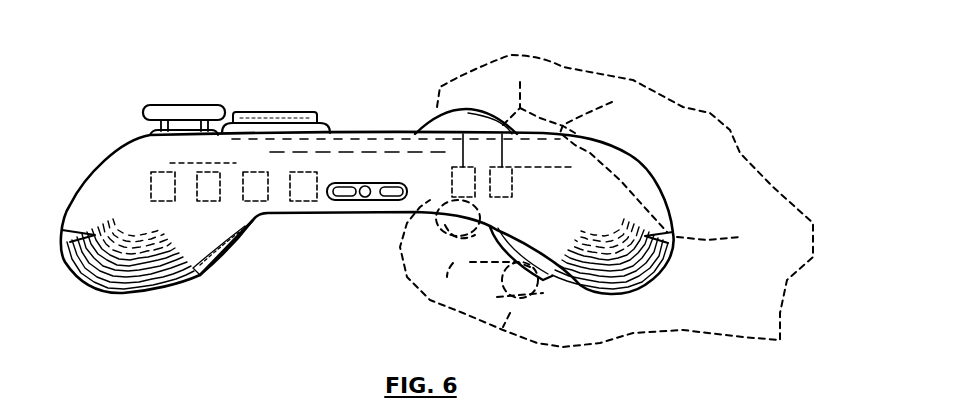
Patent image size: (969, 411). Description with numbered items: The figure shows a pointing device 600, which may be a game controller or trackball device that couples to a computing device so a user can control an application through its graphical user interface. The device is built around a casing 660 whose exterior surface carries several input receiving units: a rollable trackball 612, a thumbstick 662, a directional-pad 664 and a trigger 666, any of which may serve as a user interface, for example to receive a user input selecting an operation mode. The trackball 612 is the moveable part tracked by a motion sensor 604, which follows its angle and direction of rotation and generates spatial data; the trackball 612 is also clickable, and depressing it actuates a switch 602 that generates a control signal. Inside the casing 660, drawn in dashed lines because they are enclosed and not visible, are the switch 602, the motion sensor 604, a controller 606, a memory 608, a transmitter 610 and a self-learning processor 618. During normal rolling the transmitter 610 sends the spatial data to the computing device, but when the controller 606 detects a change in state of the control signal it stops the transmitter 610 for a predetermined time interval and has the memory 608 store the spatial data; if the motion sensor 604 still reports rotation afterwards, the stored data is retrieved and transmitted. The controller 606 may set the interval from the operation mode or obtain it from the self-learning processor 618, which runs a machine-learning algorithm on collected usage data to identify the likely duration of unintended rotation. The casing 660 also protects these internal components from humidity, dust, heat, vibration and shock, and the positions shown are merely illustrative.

The pointing device 600 is at (762, 40).
The casing 660 is at (128, 165).
The thumbstick 662 is at (190, 107).
The directional-pad 664 is at (307, 115).
The trackball 612 is at (427, 130).
The controller 606 is at (150, 190).
The memory 608 is at (206, 202).
The transmitter 610 is at (255, 202).
The self-learning processor 618 is at (300, 202).
The motion sensor 604 is at (452, 177).
The switch 602 is at (517, 183).
The trigger 666 is at (203, 277).